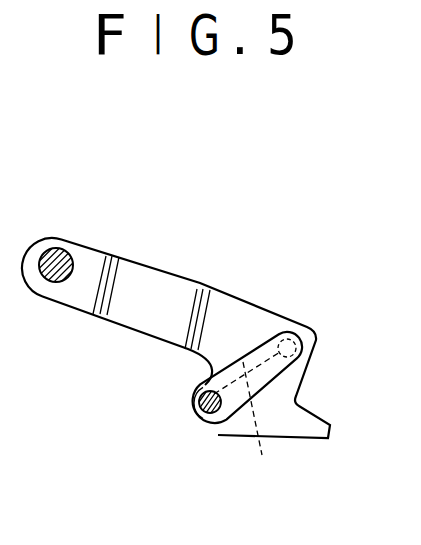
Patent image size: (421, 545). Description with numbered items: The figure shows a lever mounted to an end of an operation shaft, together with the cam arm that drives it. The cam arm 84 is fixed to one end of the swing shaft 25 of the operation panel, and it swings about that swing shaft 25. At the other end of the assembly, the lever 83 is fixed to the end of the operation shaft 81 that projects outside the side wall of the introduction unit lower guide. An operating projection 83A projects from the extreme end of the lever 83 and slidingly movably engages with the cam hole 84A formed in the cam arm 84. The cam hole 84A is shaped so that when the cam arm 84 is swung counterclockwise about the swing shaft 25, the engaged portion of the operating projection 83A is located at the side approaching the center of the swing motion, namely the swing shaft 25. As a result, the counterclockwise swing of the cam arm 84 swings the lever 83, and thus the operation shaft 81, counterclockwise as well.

The swing shaft 25 is at (62, 250).
The cam arm 84 is at (190, 278).
The cam hole 84A is at (273, 425).
The lever 83 is at (193, 405).
The operating projection 83A is at (299, 333).
The operation shaft 81 is at (200, 422).